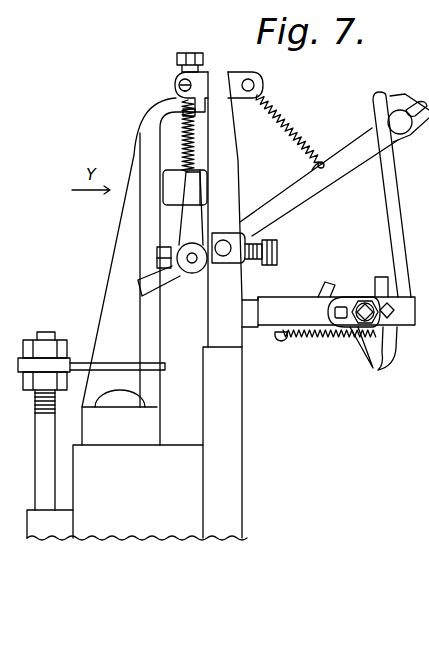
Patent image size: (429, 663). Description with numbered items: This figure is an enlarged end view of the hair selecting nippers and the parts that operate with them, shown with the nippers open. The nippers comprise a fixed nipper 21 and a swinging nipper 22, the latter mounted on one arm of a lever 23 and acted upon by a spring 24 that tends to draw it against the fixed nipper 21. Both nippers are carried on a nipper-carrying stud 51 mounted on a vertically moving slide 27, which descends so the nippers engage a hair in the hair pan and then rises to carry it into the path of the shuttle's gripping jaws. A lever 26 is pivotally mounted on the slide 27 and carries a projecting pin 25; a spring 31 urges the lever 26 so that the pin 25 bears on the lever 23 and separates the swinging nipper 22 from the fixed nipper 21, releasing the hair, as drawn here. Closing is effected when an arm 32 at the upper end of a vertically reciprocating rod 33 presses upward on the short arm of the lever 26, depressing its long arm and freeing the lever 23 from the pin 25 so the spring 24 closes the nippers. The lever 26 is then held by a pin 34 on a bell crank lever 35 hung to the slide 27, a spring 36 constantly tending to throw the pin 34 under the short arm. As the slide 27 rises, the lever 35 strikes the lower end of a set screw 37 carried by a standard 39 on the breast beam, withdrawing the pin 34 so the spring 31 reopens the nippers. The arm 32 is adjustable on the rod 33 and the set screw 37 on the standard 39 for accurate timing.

The fixed nipper 21 is at (363, 348).
The swinging nipper 22 is at (393, 345).
The lever 23 is at (404, 226).
The spring 24 is at (315, 338).
The projecting pin 25 is at (408, 118).
The lever 26 is at (135, 278).
The vertically moving slide 27 is at (240, 221).
The spring 31 is at (290, 122).
The arm 32 is at (115, 364).
The vertically reciprocating rod 33 is at (38, 478).
The pin 34 is at (202, 262).
The bell crank lever 35 is at (185, 187).
The spring 36 is at (187, 153).
The set screw 37 is at (205, 62).
The standard 39 is at (137, 319).
The nipper-carrying stud 51 is at (328, 302).